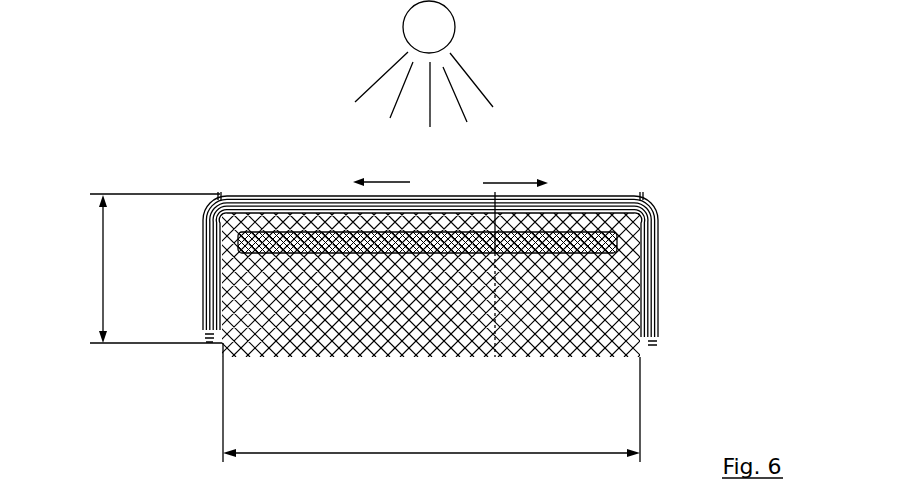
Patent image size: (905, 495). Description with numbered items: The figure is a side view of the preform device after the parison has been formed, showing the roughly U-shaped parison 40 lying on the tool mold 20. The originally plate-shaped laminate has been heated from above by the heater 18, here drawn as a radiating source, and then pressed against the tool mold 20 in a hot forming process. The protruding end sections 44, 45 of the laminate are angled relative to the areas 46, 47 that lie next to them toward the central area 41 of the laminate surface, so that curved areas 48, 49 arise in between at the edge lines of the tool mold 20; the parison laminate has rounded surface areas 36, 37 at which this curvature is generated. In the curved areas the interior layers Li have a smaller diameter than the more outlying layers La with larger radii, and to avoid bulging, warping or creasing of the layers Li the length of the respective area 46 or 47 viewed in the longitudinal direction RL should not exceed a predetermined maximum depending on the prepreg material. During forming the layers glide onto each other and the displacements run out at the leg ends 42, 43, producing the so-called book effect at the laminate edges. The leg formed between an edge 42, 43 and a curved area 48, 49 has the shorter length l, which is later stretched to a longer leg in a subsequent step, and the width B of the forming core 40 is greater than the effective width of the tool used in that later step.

The heater 18 is at (415, 30).
The tool mold 20 is at (357, 322).
The rounded surface area 36 is at (224, 228).
The rounded surface area 37 is at (638, 228).
The parison 40 is at (572, 208).
The central area 41 is at (428, 195).
The leg end 42 is at (210, 328).
The leg end 43 is at (650, 338).
The end section 44 is at (190, 298).
The end section 45 is at (678, 302).
The area 46 is at (243, 176).
The area 47 is at (598, 176).
The curved area 48 is at (213, 207).
The curved area 49 is at (648, 204).
The outlying layers La is at (262, 196).
The interior layers Li is at (314, 216).
The longitudinal direction RL is at (450, 171).
The width of the forming core B is at (431, 402).
The leg length l is at (152, 268).